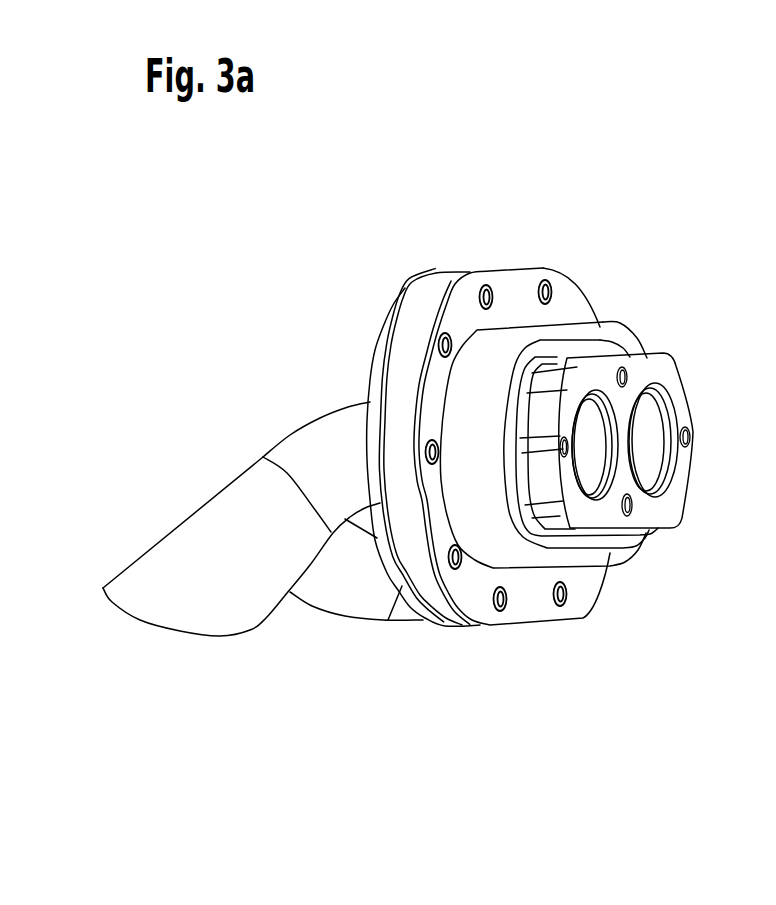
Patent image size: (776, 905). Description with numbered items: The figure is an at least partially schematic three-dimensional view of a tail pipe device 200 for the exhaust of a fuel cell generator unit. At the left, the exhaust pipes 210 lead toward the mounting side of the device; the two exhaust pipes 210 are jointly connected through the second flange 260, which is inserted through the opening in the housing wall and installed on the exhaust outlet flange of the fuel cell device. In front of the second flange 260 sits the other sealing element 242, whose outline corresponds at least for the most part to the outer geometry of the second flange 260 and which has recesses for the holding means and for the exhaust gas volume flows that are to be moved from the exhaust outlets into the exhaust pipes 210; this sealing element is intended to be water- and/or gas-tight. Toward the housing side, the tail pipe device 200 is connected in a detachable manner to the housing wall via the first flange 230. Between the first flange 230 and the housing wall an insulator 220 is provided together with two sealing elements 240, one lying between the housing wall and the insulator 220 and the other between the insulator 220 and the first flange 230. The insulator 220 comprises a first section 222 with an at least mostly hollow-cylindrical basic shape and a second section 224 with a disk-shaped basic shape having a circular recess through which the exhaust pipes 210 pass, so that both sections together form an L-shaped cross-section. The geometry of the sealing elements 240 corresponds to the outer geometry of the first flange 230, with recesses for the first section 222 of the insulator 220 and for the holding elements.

The tail pipe device 200 is at (325, 272).
The exhaust pipes 210 is at (353, 580).
The insulator 220 is at (576, 458).
The first section 222 is at (593, 334).
The second section 224 is at (453, 607).
The first flange 230 is at (377, 378).
The sealing elements 240 is at (453, 313).
The other sealing element 242 is at (653, 512).
The second flange 260 is at (550, 506).